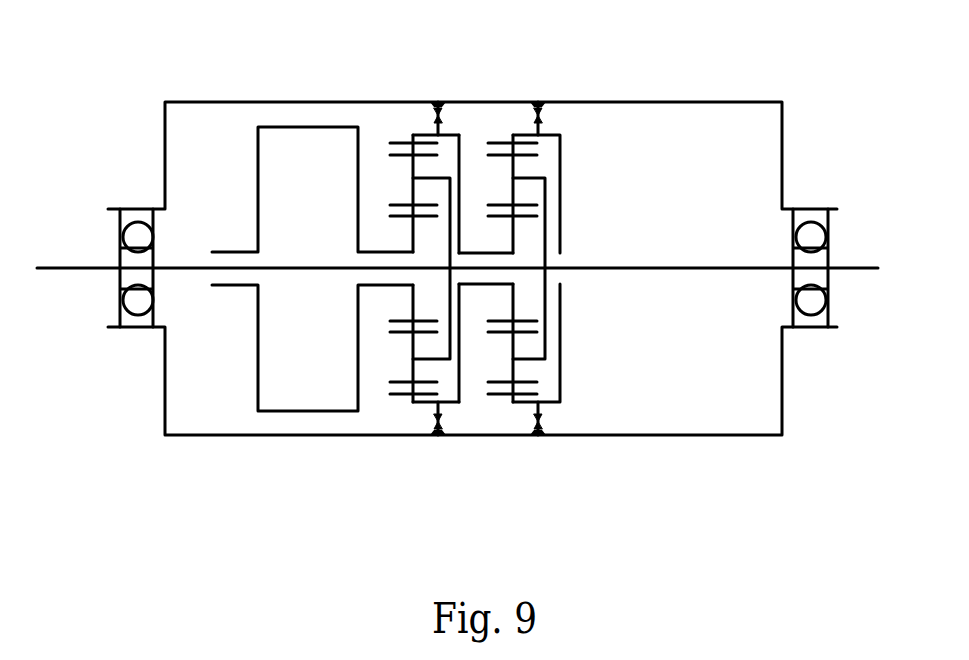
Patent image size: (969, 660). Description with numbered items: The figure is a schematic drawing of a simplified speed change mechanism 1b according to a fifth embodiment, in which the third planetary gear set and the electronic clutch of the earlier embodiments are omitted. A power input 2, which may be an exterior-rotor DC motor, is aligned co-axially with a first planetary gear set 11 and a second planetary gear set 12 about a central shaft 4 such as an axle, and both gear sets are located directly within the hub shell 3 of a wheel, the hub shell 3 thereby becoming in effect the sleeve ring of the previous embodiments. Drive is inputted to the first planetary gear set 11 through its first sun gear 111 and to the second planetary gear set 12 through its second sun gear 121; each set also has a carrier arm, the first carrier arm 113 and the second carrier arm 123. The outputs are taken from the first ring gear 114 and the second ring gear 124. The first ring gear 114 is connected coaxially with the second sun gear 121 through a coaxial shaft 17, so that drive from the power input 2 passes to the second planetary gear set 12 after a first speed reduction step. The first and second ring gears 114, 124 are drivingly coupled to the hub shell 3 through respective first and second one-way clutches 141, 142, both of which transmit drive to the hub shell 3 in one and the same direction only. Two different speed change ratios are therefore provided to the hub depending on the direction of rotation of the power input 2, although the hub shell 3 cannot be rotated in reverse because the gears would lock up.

The speed change mechanism 1b is at (684, 66).
The power input 2 is at (303, 411).
The hub shell 3 is at (205, 102).
The central shaft 4 is at (55, 268).
The first planetary gear set 11 is at (436, 305).
The second planetary gear set 12 is at (567, 312).
The coaxial shaft 17 is at (480, 251).
The first sun gear 111 is at (413, 303).
The first carrier arm 113 is at (462, 162).
The first ring gear 114 is at (417, 135).
The second sun gear 121 is at (513, 303).
The second carrier arm 123 is at (546, 210).
The second ring gear 124 is at (561, 157).
The first one-way clutch 141 is at (446, 100).
The second one-way clutch 142 is at (545, 98).